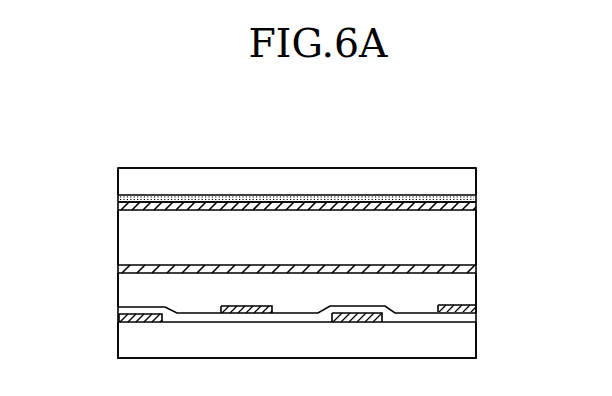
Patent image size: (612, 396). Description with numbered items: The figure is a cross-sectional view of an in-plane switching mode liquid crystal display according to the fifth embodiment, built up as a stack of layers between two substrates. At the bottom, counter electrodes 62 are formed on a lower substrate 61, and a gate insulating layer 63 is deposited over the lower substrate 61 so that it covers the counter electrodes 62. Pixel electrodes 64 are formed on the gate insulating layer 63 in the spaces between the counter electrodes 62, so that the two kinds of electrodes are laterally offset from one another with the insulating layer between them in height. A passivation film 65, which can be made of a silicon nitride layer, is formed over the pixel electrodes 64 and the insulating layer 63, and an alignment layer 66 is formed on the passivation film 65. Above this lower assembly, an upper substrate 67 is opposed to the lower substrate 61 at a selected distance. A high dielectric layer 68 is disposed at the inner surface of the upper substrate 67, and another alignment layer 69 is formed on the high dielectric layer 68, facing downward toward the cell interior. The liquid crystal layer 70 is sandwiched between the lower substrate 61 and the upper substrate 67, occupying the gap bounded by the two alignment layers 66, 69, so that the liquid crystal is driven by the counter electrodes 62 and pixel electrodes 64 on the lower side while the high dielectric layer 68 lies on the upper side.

The lower substrate 61 is at (465, 350).
The counter electrodes 62 is at (118, 319).
The gate insulating layer 63 is at (465, 320).
The pixel electrodes 64 is at (477, 307).
The passivation film 65 is at (127, 283).
The alignment layer 66 is at (120, 270).
The upper substrate 67 is at (427, 177).
The high dielectric layer 68 is at (460, 198).
The alignment layer 69 is at (472, 207).
The liquid crystal layer 70 is at (465, 242).